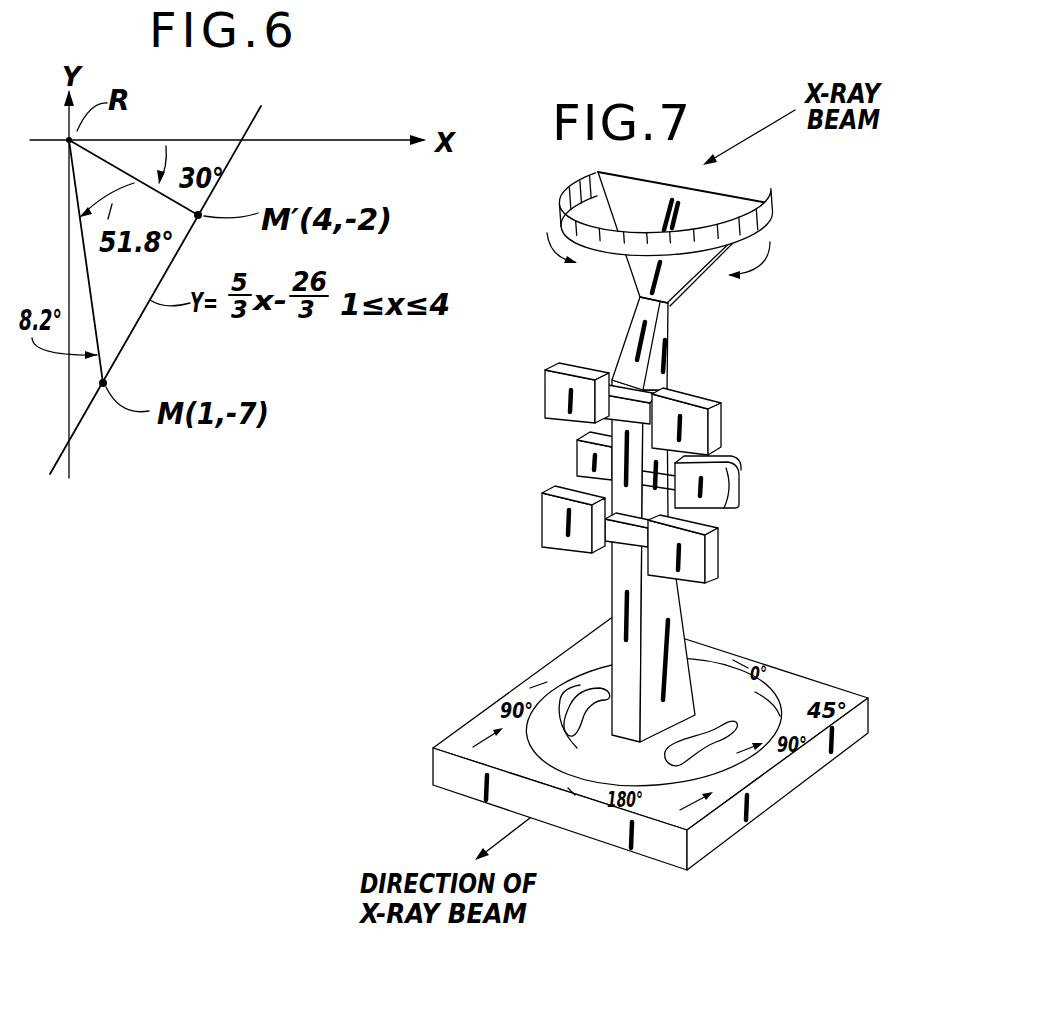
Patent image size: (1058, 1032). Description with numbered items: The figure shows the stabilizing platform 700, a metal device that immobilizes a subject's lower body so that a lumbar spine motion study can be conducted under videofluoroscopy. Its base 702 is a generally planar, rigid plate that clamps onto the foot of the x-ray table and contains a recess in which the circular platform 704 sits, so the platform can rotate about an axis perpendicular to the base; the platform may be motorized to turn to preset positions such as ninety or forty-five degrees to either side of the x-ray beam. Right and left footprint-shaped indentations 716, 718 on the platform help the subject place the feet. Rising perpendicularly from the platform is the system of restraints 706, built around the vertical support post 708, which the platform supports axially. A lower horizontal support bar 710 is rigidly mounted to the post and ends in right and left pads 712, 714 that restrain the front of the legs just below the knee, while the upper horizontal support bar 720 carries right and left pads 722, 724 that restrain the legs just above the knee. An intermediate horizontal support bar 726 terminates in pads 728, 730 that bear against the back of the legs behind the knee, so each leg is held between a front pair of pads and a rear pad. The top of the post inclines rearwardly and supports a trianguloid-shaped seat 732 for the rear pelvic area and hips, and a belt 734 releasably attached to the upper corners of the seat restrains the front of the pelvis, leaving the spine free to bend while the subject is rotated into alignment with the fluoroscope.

The stabilizing platform 700 is at (493, 521).
The base 702 is at (717, 833).
The circular platform 704 is at (768, 705).
The system of restraints 706 is at (802, 402).
The vertical support post 708 is at (666, 613).
The lower horizontal support bar 710 is at (617, 541).
The right pad 712 is at (555, 547).
The left pad 714 is at (689, 567).
The right footprint-shaped indentation 716 is at (588, 733).
The left footprint-shaped indentation 718 is at (704, 723).
The upper horizontal support bar 720 is at (681, 343).
The right pad 722 is at (550, 380).
The left pad 724 is at (697, 438).
The intermediate horizontal support bar 726 is at (670, 504).
The pad 728 is at (587, 457).
The pad 730 is at (739, 490).
The trianguloid-shaped seat 732 is at (706, 204).
The belt 734 is at (623, 243).